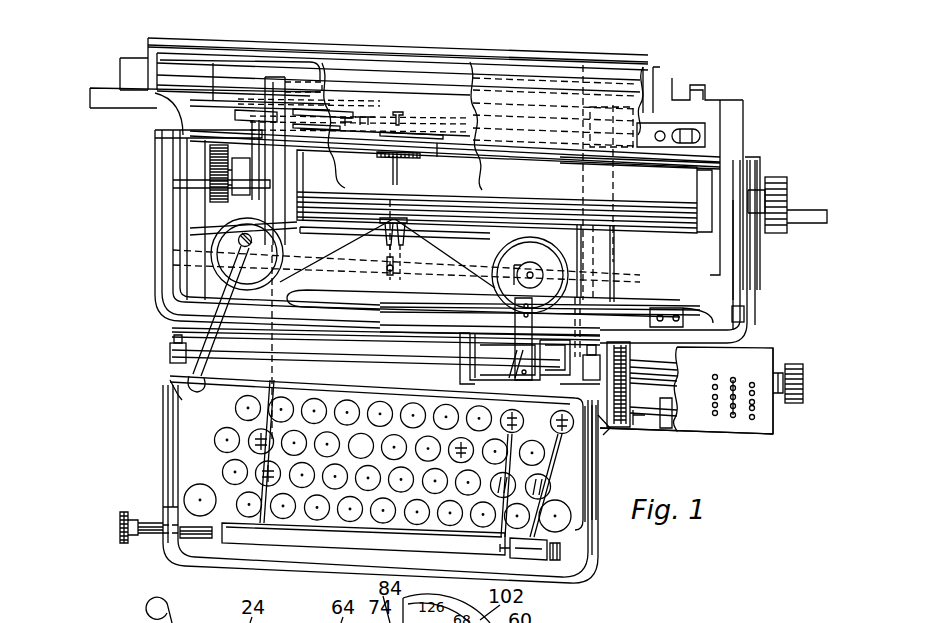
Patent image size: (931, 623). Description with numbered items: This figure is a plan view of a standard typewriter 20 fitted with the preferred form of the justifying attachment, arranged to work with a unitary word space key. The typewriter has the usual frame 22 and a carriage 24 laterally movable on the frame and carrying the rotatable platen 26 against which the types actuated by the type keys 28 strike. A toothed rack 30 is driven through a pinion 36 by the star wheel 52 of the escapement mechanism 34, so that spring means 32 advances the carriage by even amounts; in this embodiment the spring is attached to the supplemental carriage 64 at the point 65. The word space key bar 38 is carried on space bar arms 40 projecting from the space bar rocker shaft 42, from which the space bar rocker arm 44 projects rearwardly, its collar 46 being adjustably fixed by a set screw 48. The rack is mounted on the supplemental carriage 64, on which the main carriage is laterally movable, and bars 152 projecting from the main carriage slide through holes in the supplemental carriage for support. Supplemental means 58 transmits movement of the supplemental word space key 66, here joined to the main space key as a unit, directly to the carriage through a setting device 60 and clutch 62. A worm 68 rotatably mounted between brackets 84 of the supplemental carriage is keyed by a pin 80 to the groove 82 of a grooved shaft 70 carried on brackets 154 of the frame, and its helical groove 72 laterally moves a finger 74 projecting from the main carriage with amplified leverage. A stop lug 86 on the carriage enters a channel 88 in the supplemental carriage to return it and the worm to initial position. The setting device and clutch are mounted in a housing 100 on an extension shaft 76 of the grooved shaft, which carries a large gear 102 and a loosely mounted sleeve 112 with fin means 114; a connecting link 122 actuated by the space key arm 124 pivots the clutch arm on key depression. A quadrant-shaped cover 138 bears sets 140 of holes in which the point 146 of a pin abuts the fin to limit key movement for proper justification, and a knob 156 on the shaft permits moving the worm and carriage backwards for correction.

The typewriter 20 is at (158, 386).
The typewriter frame 22 is at (160, 223).
The carriage 24 is at (744, 133).
The platen 26 is at (683, 207).
The type keys 28 is at (377, 464).
The toothed rack 30 is at (414, 158).
The spring means 32 is at (293, 100).
The escapement mechanism 34 is at (403, 110).
The pinion 36 is at (380, 155).
The word space key bar 38 is at (363, 539).
The space bar arms 40 is at (262, 433).
The space bar rocker shaft 42 is at (483, 293).
The space bar rocker arm 44 is at (403, 202).
The collar 46 is at (397, 261).
The set screw 48 is at (401, 270).
The star wheel 52 is at (427, 115).
The supplemental means 58 is at (548, 466).
The setting device 60 is at (686, 390).
The clutch 62 is at (645, 413).
The supplemental carriage 64 is at (752, 291).
The spring attachment point 65 is at (698, 127).
The supplemental word space key 66 is at (537, 560).
The worm 68 is at (500, 356).
The grooved shaft 70 is at (328, 362).
The helical groove 72 is at (507, 375).
The finger 74 is at (526, 300).
The extension shaft 76 is at (778, 370).
The pin or key 80 is at (520, 377).
The groove 82 is at (373, 362).
The brackets 84 is at (467, 370).
The stop lug 86 is at (747, 319).
The channel 88 is at (644, 330).
The housing 100 is at (772, 436).
The large gear 102 is at (627, 347).
The sleeve 112 is at (640, 350).
The fin means 114 is at (674, 413).
The connecting link 122 is at (600, 427).
The space key arm 124 is at (584, 477).
The cover 138 is at (712, 434).
The sets of holes 140 is at (748, 437).
The point 146 is at (549, 560).
The bars 152 is at (173, 184).
The brackets 154 is at (168, 354).
The knob 156 is at (792, 403).